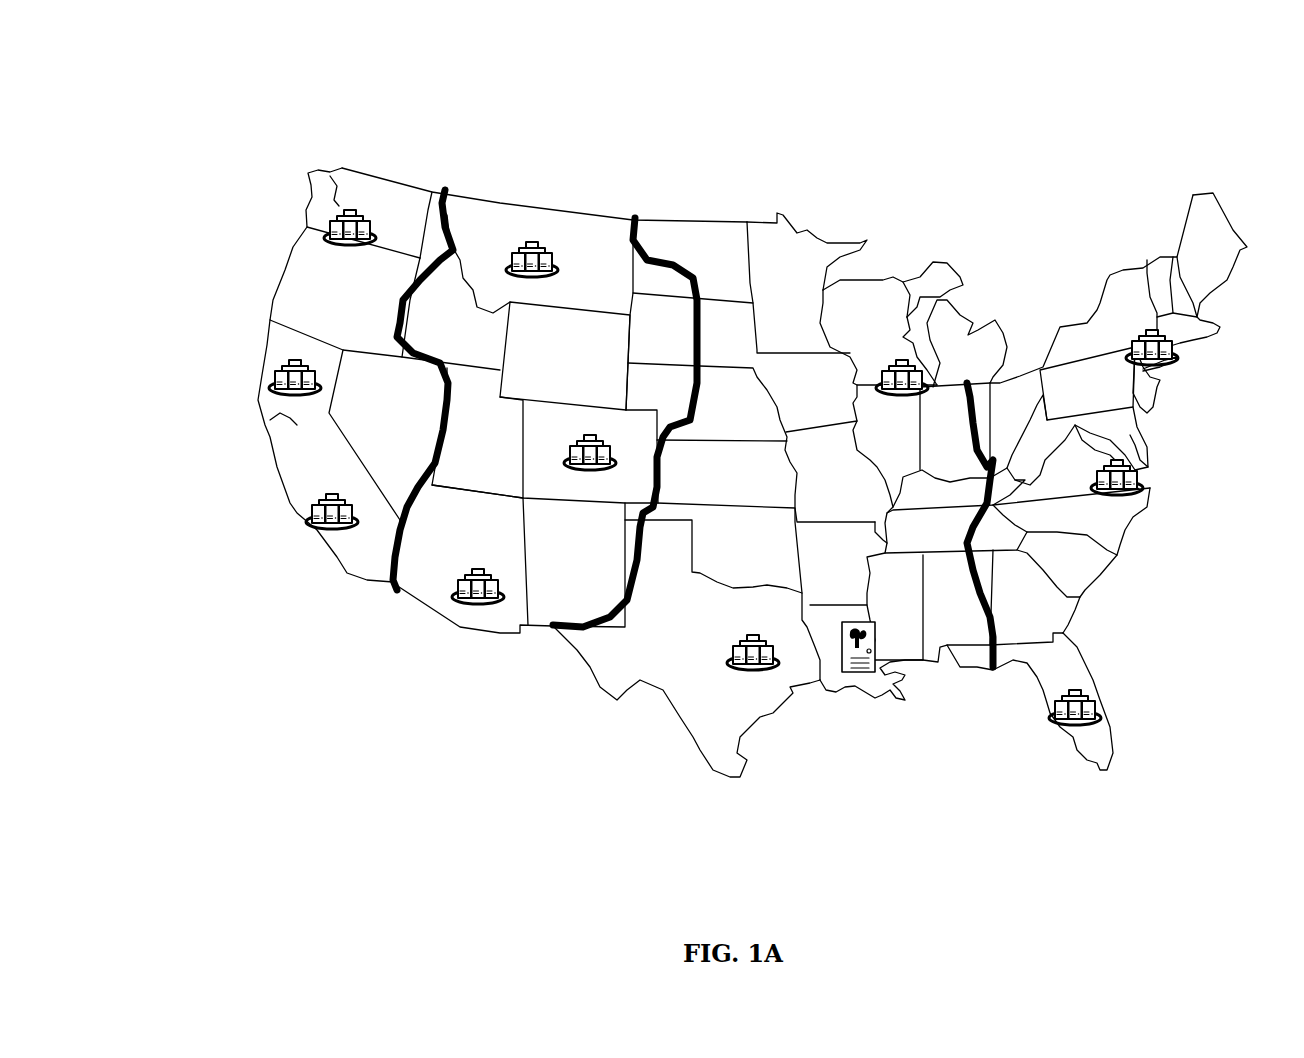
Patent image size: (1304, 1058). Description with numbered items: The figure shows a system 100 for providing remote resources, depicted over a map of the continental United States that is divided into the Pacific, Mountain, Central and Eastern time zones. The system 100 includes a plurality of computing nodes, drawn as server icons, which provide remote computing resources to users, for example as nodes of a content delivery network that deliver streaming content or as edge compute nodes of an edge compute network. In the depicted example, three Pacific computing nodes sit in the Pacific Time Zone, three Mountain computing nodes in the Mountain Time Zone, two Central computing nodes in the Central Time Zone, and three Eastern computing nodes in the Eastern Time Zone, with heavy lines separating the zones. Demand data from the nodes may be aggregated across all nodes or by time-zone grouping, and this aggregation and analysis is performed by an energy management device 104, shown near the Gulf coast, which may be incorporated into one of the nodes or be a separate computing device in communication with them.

The system 100 is at (248, 80).
The energy management device 104 is at (860, 673).